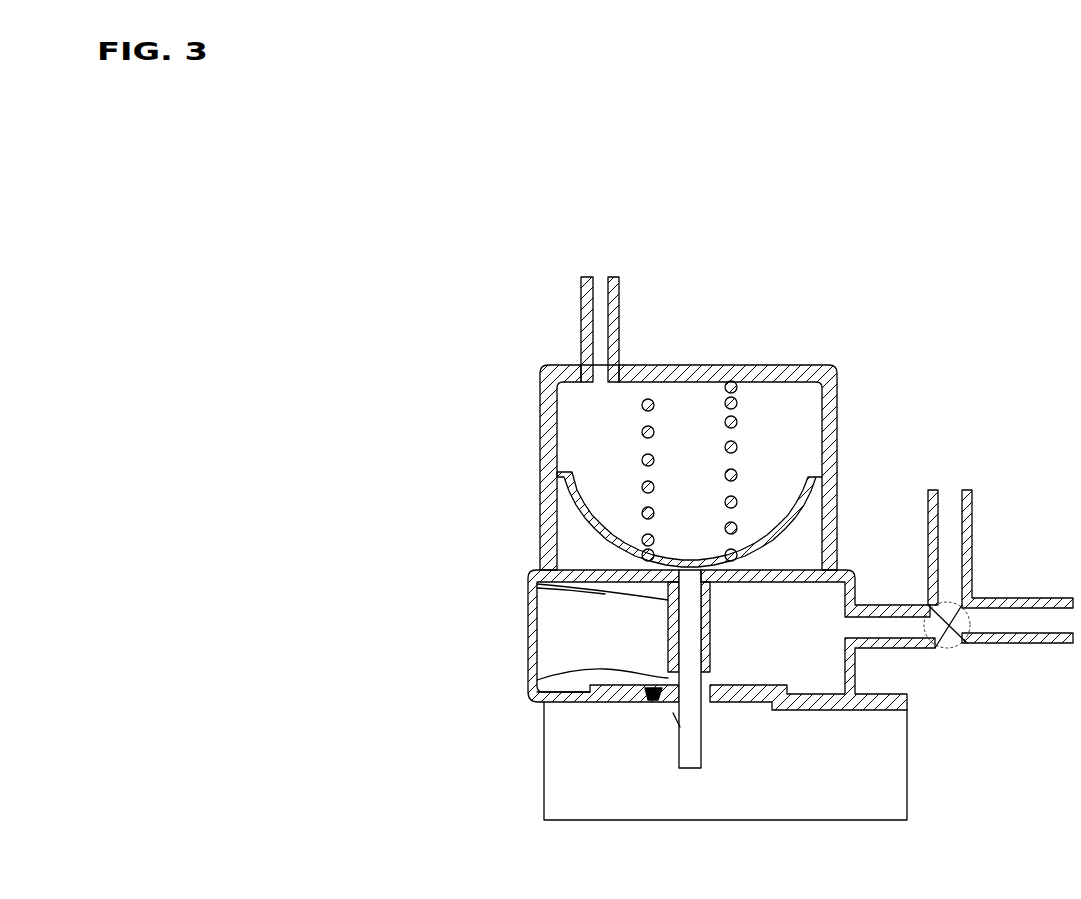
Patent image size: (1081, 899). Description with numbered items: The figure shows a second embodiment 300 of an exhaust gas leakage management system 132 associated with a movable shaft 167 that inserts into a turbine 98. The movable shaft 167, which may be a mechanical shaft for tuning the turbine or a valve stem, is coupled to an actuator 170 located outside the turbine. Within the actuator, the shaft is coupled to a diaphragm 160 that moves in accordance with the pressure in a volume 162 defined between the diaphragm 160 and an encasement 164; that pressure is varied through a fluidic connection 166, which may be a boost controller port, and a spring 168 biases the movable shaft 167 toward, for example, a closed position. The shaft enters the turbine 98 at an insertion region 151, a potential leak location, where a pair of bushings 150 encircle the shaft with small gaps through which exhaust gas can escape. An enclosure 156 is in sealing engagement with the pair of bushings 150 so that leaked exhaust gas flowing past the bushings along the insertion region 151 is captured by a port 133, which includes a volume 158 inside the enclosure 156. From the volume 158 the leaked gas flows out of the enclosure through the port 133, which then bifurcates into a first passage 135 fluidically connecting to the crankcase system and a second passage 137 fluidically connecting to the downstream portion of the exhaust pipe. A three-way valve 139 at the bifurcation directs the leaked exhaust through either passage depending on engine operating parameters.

The embodiment 300 is at (366, 113).
The actuator 170 is at (842, 262).
The encasement 164 is at (723, 365).
The fluidic connection 166 is at (600, 285).
The volume 162 is at (623, 449).
The spring 168 is at (740, 445).
The diaphragm 160 is at (800, 507).
The exhaust gas leakage management system 132 is at (465, 551).
The enclosure 156 is at (527, 601).
The pair of bushings 150 is at (540, 590).
The volume 158 is at (792, 647).
The movable shaft 167 is at (536, 681).
The insertion region 151 is at (640, 700).
The turbine 98 is at (842, 782).
The port 133 is at (864, 614).
The second passage 137 is at (968, 522).
The first passage 135 is at (1008, 603).
The valve 139 is at (945, 644).